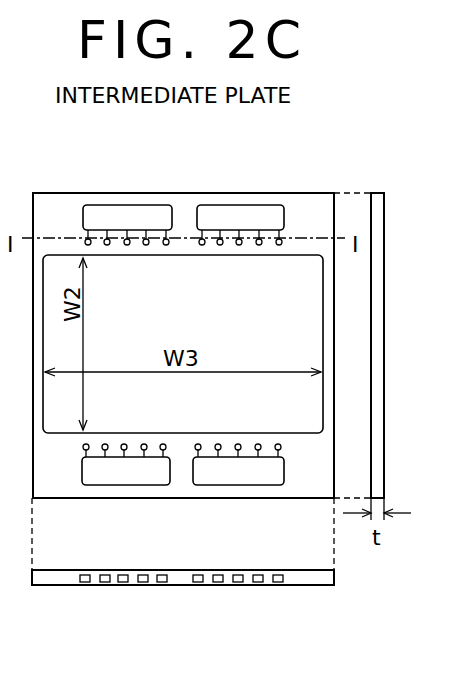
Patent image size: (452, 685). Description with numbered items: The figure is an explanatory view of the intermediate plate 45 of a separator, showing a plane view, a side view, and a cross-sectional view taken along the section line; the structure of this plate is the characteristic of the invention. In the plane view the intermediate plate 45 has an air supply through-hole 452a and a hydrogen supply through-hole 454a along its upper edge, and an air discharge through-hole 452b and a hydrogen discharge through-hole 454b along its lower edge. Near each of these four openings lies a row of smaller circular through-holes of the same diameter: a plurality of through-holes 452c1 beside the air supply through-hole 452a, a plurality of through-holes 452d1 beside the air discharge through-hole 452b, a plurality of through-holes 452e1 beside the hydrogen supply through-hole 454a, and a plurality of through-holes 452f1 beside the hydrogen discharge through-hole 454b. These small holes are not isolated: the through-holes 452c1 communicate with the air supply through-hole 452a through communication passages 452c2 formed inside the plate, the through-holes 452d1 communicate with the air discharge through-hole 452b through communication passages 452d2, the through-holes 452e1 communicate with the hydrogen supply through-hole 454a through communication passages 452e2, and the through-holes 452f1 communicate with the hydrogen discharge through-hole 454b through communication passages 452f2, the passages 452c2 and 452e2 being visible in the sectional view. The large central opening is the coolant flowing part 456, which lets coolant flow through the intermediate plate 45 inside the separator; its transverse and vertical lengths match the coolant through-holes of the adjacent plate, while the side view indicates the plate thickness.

The intermediate plate 45 is at (281, 193).
The air supply through-hole 452a is at (229, 204).
The air discharge through-hole 452b is at (133, 486).
The through-holes 452c1 is at (259, 245).
The communication passages 452c2 is at (286, 237).
The through-holes 452d1 is at (144, 444).
The communication passages 452d2 is at (82, 454).
The through-holes 452e1 is at (146, 245).
The communication passages 452e2 is at (85, 238).
The through-holes 452f1 is at (258, 444).
The communication passages 452f2 is at (283, 452).
The hydrogen supply through-hole 454a is at (110, 205).
The hydrogen discharge through-hole 454b is at (230, 486).
The coolant flowing part 456 is at (197, 256).